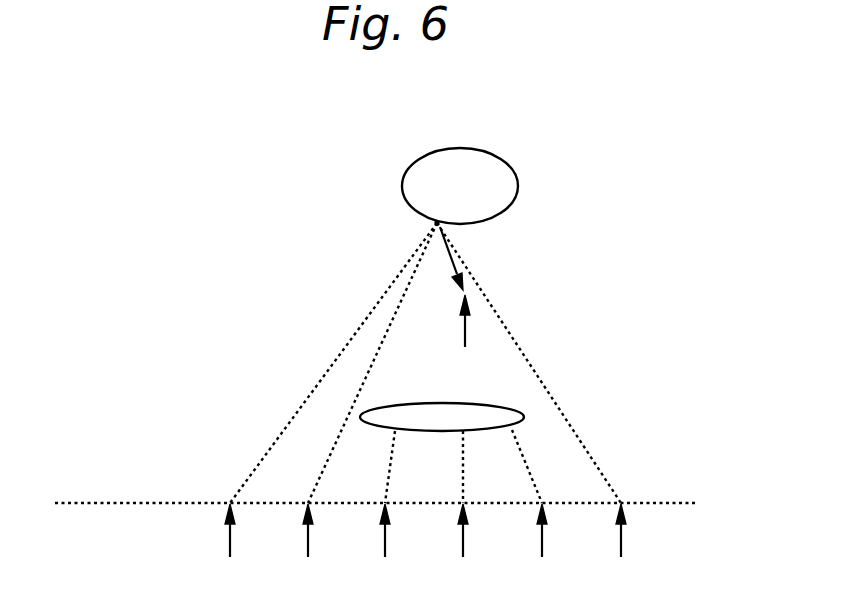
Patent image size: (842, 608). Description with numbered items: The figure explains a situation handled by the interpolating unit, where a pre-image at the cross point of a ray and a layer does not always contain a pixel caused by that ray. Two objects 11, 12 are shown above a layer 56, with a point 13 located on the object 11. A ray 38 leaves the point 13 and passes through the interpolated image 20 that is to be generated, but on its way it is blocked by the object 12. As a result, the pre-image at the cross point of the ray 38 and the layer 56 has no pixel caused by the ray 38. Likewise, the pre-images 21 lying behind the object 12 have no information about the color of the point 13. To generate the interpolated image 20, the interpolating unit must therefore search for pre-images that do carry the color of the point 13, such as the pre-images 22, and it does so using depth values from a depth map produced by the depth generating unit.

The object 11 is at (458, 148).
The point on the object 13 is at (432, 222).
The ray 38 is at (465, 284).
The interpolated image 20 is at (465, 347).
The object 12 is at (470, 402).
The layer 56 is at (671, 500).
The pre-images 22 is at (230, 557).
The pre-images 21 is at (385, 557).